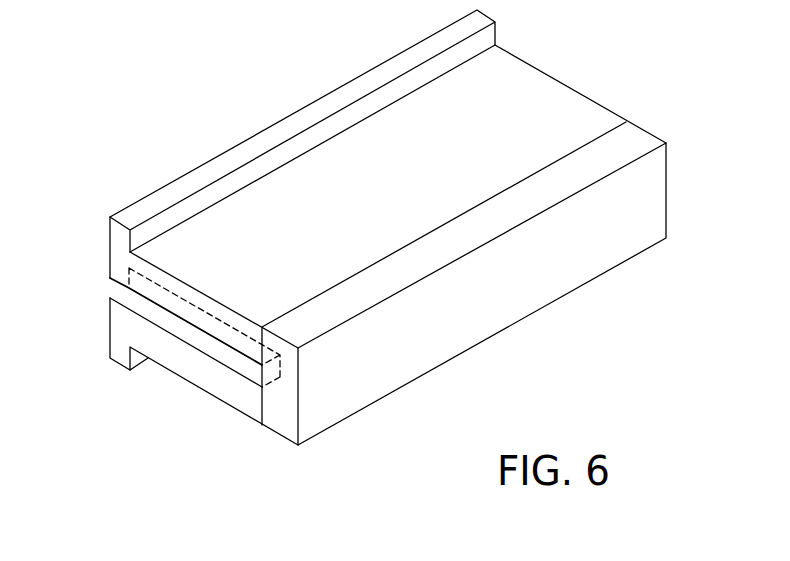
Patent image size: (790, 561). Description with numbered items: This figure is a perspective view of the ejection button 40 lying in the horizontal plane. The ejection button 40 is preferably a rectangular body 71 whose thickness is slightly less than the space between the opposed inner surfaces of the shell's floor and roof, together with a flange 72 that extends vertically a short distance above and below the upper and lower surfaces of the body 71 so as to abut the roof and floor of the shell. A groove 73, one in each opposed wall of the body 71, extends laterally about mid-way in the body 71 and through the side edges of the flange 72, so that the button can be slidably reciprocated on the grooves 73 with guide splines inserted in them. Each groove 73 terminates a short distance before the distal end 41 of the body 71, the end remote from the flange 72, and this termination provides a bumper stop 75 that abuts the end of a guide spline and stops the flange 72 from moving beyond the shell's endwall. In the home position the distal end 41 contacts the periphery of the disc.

The ejection button 40 is at (642, 298).
The distal end 41 is at (485, 328).
The rectangular body 71 is at (392, 202).
The flange 72 is at (284, 118).
The groove 73 is at (111, 290).
The bumper stop 75 is at (284, 421).